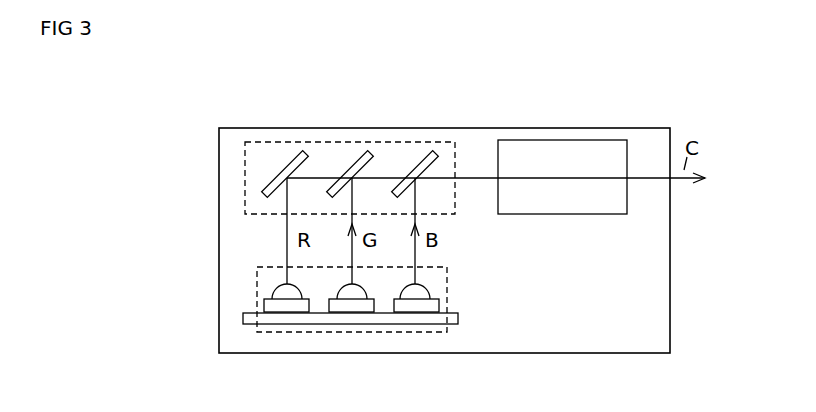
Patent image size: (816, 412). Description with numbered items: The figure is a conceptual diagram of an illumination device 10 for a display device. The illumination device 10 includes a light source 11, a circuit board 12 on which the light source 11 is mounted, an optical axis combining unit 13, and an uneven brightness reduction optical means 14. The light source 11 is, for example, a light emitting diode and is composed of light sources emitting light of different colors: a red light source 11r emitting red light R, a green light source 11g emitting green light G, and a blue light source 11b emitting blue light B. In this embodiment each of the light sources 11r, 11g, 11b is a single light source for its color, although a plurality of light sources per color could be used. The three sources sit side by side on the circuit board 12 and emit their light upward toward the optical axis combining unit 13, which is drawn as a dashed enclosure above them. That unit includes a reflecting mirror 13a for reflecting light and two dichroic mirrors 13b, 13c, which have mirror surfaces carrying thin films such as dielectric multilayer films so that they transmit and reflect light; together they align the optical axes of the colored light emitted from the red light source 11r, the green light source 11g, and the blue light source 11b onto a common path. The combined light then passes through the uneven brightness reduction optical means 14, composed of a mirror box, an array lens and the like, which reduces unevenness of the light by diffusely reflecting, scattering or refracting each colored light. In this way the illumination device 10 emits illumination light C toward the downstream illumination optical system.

The illumination device 10 is at (462, 223).
The light source 11 is at (316, 292).
The red light source 11r is at (278, 342).
The green light source 11g is at (343, 342).
The blue light source 11b is at (408, 341).
The circuit board 12 is at (372, 327).
The optical axis combining unit 13 is at (312, 176).
The reflecting mirror 13a is at (301, 146).
The dichroic mirror 13b is at (368, 146).
The dichroic mirror 13c is at (431, 146).
The uneven brightness reduction optical means 14 is at (562, 153).